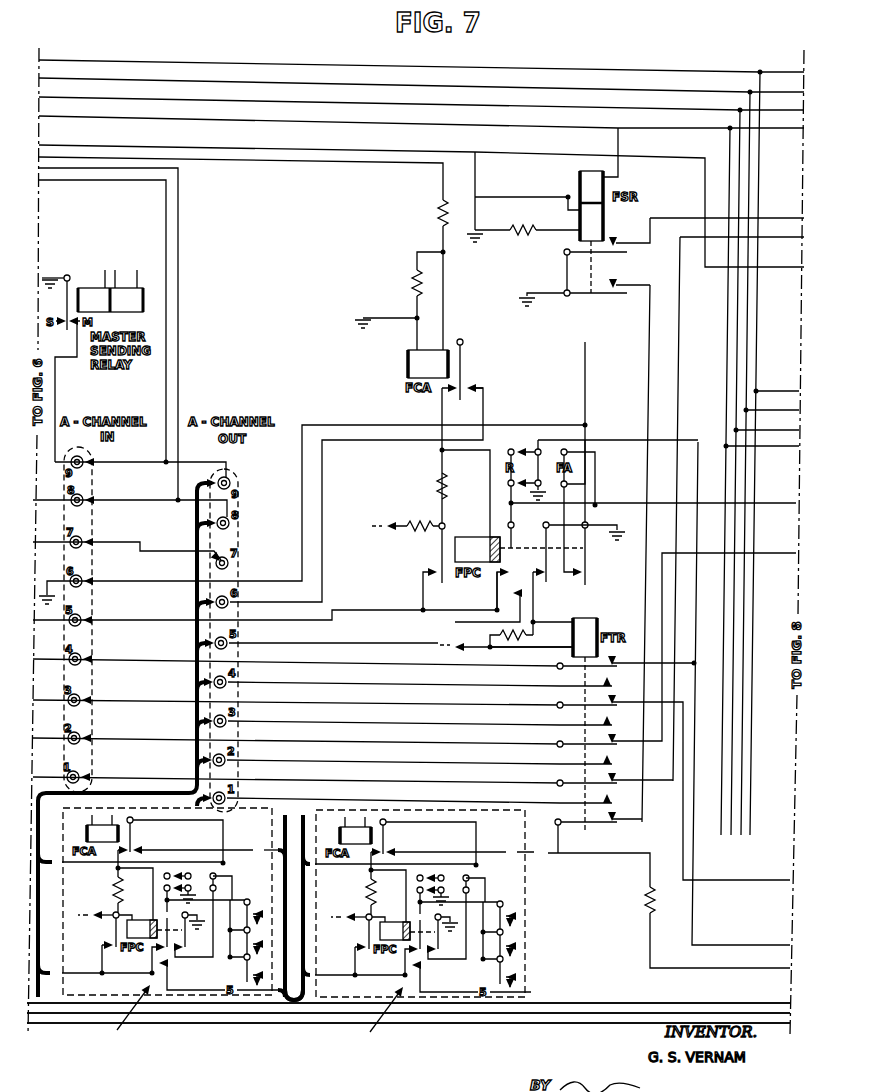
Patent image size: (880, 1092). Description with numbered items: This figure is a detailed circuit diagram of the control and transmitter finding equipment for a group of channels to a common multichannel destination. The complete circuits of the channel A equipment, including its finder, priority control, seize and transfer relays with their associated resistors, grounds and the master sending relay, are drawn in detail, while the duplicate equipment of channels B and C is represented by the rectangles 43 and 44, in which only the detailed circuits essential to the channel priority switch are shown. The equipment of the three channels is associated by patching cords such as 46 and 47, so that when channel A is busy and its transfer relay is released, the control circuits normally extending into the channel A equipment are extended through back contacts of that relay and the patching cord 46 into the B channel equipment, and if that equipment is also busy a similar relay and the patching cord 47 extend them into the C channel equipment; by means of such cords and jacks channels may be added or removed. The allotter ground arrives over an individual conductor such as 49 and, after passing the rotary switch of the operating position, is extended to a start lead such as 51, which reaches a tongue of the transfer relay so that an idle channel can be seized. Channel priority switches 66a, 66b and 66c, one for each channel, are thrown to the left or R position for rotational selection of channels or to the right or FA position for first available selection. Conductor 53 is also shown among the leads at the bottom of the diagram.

The rectangle representing channel B equipment 43 is at (163, 935).
The rectangle representing channel C equipment 44 is at (552, 938).
The patching cord 46 is at (35, 930).
The patching cord 47 is at (293, 1012).
The individual conductor 49 is at (593, 1024).
The start lead 51 is at (29, 1026).
The conductor 53 is at (733, 1012).
The channel priority switch 66a is at (537, 470).
The channel priority switch 66b is at (215, 882).
The channel priority switch 66c is at (473, 884).